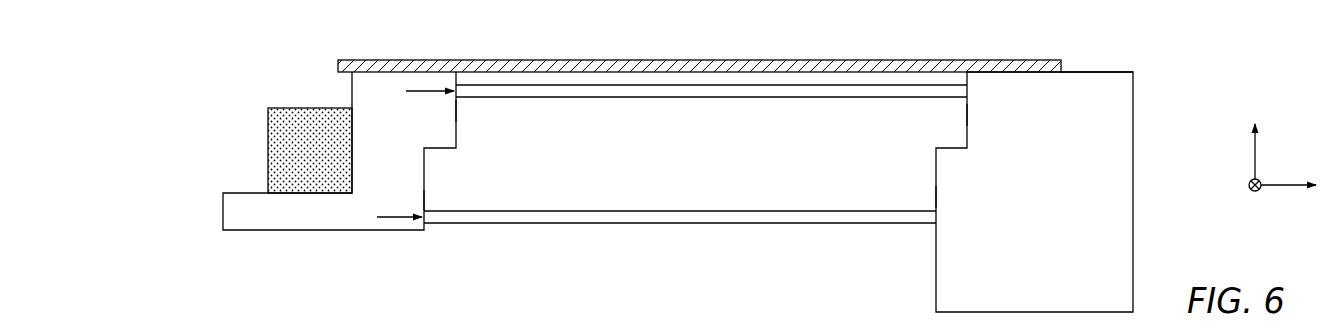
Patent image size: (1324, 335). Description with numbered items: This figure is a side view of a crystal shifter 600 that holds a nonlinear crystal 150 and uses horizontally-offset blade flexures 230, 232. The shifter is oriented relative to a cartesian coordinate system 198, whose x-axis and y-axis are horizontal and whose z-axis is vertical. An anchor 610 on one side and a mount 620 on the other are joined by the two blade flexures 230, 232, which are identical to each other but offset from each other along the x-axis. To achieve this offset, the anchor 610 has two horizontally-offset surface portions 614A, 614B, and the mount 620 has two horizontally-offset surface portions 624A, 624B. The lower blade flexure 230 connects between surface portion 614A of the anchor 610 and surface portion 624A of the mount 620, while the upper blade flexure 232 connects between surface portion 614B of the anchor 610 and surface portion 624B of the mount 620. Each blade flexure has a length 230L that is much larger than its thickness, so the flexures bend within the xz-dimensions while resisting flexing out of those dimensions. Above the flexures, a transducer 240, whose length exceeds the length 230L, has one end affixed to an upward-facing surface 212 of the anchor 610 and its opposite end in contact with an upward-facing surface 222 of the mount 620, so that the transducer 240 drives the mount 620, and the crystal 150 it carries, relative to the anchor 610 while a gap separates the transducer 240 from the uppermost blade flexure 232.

The crystal shifter 600 is at (243, 70).
The upward-facing surface 212 is at (1073, 66).
The upward-facing surface 222 is at (379, 66).
The nonlinear crystal 150 is at (325, 162).
The mount 620 is at (407, 162).
The anchor 610 is at (1068, 176).
The surface portion 624A is at (427, 203).
The surface portion 624B is at (460, 111).
The surface portion 614A is at (933, 198).
The surface portion 614B is at (964, 114).
The transducer 240 is at (669, 74).
The blade flexure 232 is at (767, 99).
The blade flexure 230 is at (738, 210).
The length 230L is at (970, 92).
The cartesian coordinate system 198 is at (1241, 136).